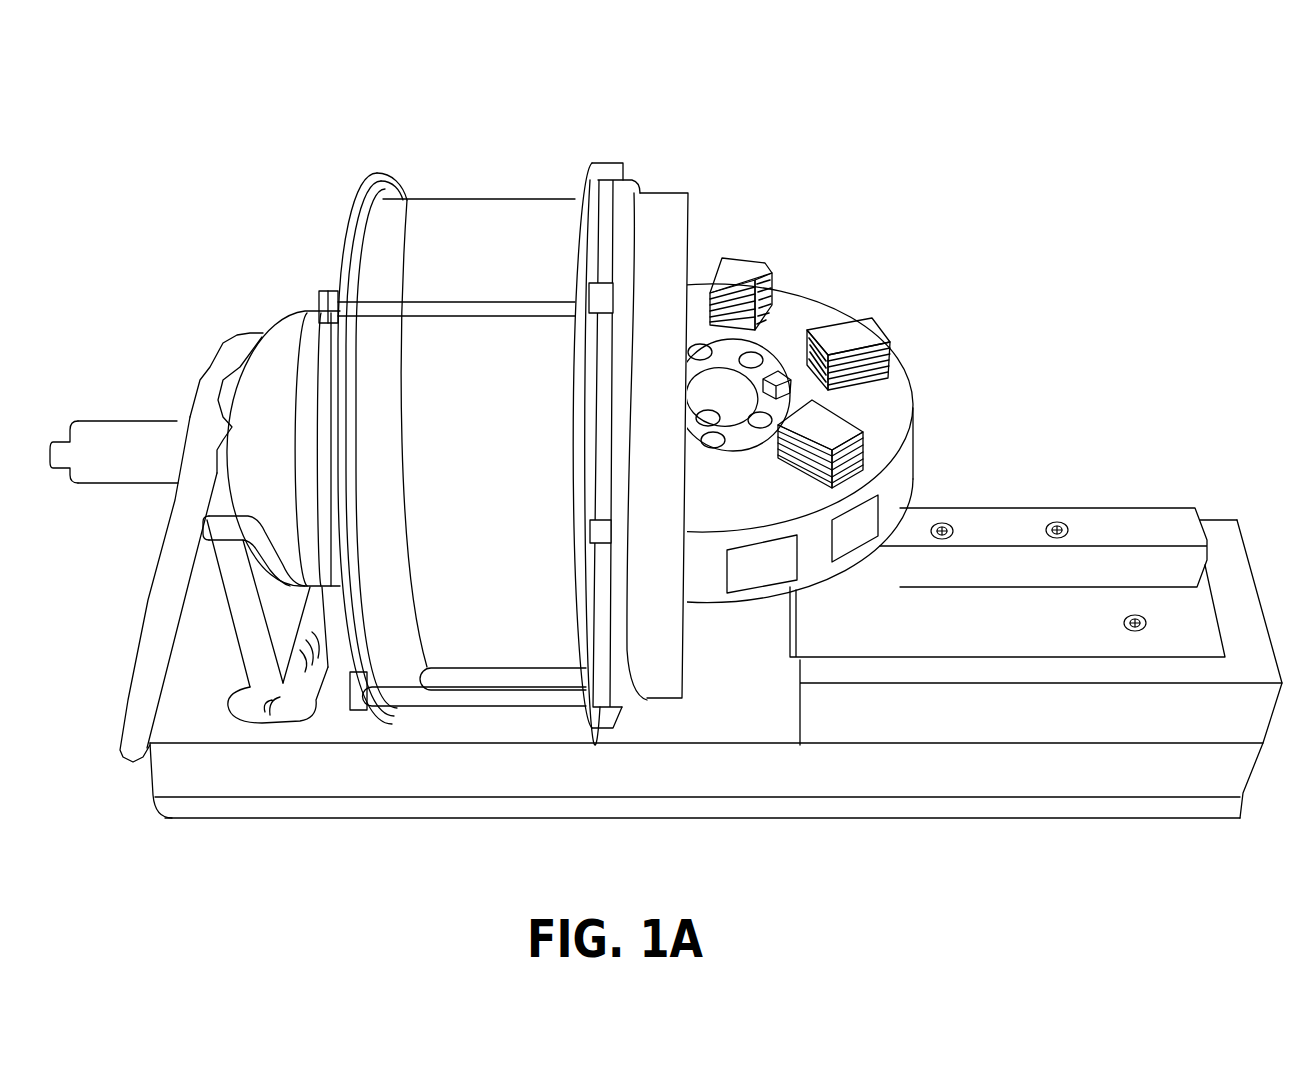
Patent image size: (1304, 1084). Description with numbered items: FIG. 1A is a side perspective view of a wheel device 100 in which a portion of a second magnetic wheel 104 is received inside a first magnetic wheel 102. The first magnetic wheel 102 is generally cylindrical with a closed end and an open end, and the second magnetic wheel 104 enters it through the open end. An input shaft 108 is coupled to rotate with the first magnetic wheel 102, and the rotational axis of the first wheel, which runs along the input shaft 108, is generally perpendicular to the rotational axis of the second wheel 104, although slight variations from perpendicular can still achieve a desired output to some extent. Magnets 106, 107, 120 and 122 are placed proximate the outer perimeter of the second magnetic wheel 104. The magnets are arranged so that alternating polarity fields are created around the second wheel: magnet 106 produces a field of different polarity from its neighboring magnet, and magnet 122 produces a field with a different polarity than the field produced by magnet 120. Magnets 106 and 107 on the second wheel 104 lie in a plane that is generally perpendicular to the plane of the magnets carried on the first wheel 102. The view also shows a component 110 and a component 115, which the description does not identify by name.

The wheel device 100 is at (809, 140).
The first magnetic wheel 102 is at (660, 250).
The second magnetic wheel 104 is at (892, 402).
The magnet 106 is at (738, 273).
The magnet 107 is at (845, 335).
The input shaft 108 is at (122, 437).
The linear rail 110 is at (1097, 530).
The support bracket 115 is at (247, 635).
The magnet 120 is at (757, 565).
The magnet 122 is at (873, 517).